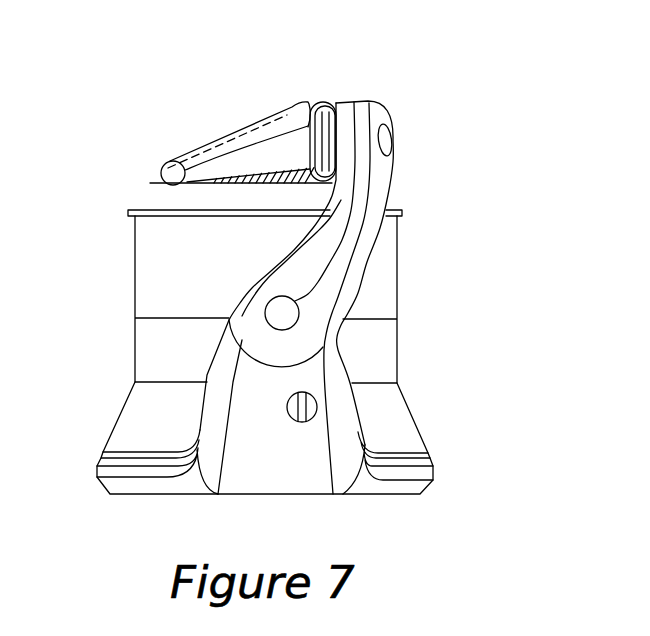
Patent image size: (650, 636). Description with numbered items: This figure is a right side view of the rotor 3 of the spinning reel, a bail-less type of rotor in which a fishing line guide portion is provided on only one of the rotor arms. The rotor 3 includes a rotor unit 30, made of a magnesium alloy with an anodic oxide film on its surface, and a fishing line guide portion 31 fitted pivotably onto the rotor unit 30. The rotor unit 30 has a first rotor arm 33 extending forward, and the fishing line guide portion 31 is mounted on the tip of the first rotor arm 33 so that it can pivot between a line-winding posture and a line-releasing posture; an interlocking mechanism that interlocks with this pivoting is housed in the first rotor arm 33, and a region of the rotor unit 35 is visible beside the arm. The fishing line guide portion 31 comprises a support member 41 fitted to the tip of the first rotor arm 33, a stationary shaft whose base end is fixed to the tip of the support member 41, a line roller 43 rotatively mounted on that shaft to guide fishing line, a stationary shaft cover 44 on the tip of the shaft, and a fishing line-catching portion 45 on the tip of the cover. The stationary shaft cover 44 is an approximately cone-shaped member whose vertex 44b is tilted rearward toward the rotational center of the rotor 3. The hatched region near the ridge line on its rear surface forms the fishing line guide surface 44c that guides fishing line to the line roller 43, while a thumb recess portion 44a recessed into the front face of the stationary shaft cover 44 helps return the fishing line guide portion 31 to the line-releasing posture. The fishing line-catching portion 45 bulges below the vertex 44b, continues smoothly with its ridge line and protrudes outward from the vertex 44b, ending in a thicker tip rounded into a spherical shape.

The rotor 3 is at (323, 352).
The rotor unit 30 is at (400, 340).
The fishing line guide portion 31 is at (358, 253).
The first rotor arm 33 is at (340, 442).
The side wall of base 35 is at (388, 280).
The support member 41 is at (373, 177).
The line roller 43 is at (332, 103).
The stationary shaft cover 44 is at (184, 166).
The thumb recess portion 44a is at (260, 143).
The vertex 44b is at (155, 181).
The fishing line guide surface 44c is at (240, 177).
The fishing line-catching portion 45 is at (161, 173).